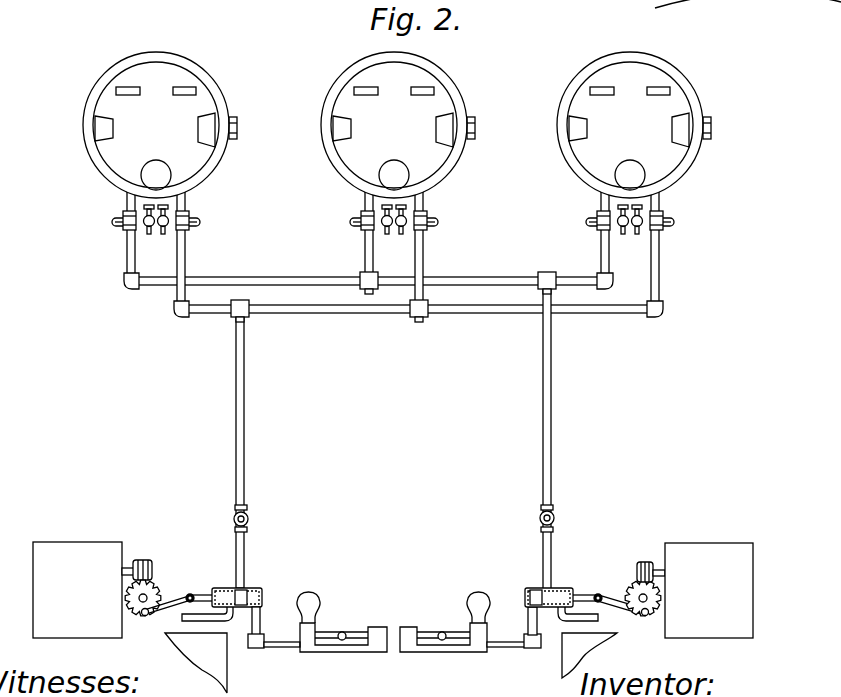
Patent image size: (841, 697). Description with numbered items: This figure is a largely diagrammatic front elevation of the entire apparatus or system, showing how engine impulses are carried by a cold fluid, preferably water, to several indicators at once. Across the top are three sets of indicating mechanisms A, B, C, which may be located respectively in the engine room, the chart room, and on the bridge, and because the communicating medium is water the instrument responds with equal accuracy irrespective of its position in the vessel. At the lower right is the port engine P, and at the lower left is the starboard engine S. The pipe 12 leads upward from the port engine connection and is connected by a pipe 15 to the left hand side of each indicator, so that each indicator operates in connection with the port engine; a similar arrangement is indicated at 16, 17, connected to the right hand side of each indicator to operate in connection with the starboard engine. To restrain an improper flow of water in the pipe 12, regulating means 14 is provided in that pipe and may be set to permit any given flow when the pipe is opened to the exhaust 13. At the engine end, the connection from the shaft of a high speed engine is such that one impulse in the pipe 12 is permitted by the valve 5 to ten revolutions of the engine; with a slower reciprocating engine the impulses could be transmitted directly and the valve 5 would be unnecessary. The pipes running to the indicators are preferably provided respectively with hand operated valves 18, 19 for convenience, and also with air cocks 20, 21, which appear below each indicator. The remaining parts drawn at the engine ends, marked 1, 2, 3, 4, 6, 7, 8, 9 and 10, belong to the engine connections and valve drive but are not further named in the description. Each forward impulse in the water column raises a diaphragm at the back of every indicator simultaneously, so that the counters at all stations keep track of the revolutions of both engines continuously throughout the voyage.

The supply pipe to burner 1 is at (528, 620).
The burner branch pipe 2 is at (516, 648).
The burner 3 is at (480, 646).
The pedestal bracket 4 is at (589, 655).
The valve 5 is at (560, 590).
The piston rod link 6 is at (610, 597).
The gear wheel 7 is at (661, 606).
The worm 8 is at (644, 563).
The worm shaft 9 is at (662, 573).
The motor casing 10 is at (709, 590).
The pipe 12 is at (551, 363).
The exhaust 13 is at (600, 619).
The regulating means 14 is at (539, 518).
The pipe 15 is at (262, 279).
The pipe 16 is at (244, 355).
The pipe 17 is at (472, 316).
The hand operated valve 18 is at (348, 212).
The hand operated valve 19 is at (434, 212).
The air cock 20 is at (145, 228).
The air cock 21 is at (167, 228).
The indicating mechanism A is at (83, 127).
The indicating mechanism B is at (321, 128).
The indicating mechanism C is at (557, 127).
The starboard engine S is at (122, 543).
The port engine P is at (668, 545).